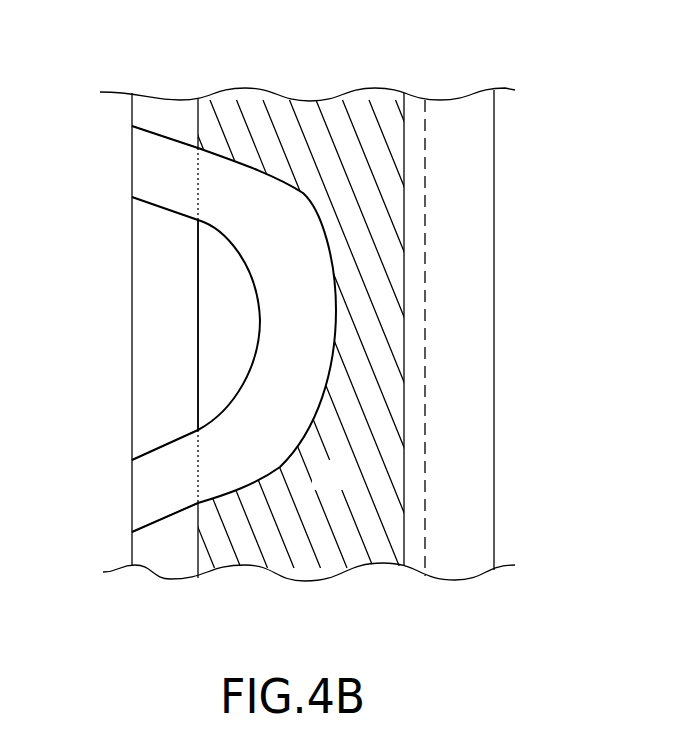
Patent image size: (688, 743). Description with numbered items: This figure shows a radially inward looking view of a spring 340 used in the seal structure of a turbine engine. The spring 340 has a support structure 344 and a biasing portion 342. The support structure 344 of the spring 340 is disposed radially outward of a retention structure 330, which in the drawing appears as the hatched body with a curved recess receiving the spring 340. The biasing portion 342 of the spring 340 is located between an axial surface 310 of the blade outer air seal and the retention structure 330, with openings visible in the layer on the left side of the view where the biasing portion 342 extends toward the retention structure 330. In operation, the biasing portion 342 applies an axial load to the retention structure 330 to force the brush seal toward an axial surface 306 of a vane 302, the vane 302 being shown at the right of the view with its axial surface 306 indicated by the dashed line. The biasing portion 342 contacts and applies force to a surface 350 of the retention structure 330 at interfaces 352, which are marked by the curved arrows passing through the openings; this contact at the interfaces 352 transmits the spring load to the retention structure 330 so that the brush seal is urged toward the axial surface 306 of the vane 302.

The vane 302 is at (478, 336).
The axial surface 306 is at (425, 318).
The axial surface 310 is at (132, 351).
The retention structure 330 is at (347, 487).
The spring 340 is at (317, 213).
The biasing portion 342 is at (150, 165).
The support structure 344 is at (232, 187).
The surface 350 is at (198, 258).
The interfaces 352 is at (198, 170).